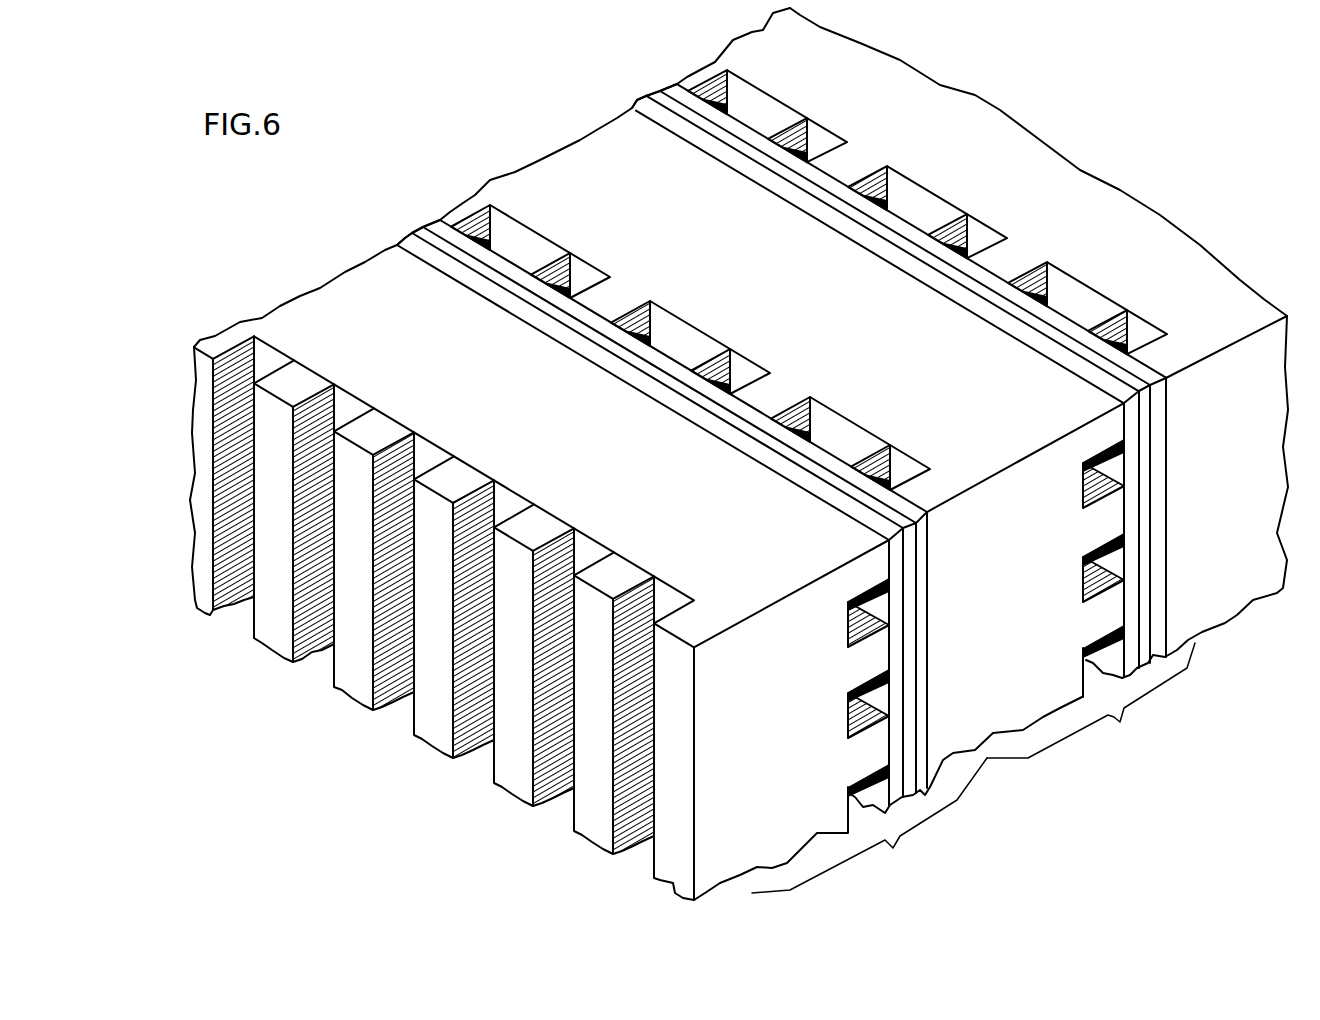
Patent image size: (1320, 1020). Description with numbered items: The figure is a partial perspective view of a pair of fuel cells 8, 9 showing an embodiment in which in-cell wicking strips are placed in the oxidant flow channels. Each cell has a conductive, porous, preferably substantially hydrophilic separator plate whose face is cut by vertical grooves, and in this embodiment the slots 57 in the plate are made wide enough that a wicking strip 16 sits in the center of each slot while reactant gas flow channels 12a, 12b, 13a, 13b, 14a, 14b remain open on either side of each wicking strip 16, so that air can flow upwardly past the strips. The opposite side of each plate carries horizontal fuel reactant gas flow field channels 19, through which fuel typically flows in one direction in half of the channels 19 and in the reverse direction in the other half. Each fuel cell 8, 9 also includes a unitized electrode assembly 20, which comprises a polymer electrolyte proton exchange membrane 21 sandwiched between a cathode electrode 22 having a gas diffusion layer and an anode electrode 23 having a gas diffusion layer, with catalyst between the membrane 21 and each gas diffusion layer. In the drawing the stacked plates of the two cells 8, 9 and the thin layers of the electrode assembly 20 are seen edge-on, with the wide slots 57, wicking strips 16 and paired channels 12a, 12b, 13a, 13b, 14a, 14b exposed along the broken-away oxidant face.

The fuel cell 8 is at (869, 825).
The fuel cell 9 is at (1091, 700).
The reactant gas flow channel 12a is at (670, 600).
The reactant gas flow channel 12b is at (588, 550).
The reactant gas flow channel 13a is at (515, 505).
The reactant gas flow channel 13b is at (438, 458).
The reactant gas flow channel 14a is at (350, 408).
The reactant gas flow channel 14b is at (265, 362).
The in-cell wicking strip 16 is at (303, 379).
The fuel reactant gas flow field channel 19 is at (882, 607).
The unitized electrode assembly 20 is at (527, 156).
The proton exchange membrane 21 is at (818, 472).
The cathode electrode 22 is at (880, 525).
The anode electrode 23 is at (930, 480).
The slot 57 is at (423, 433).